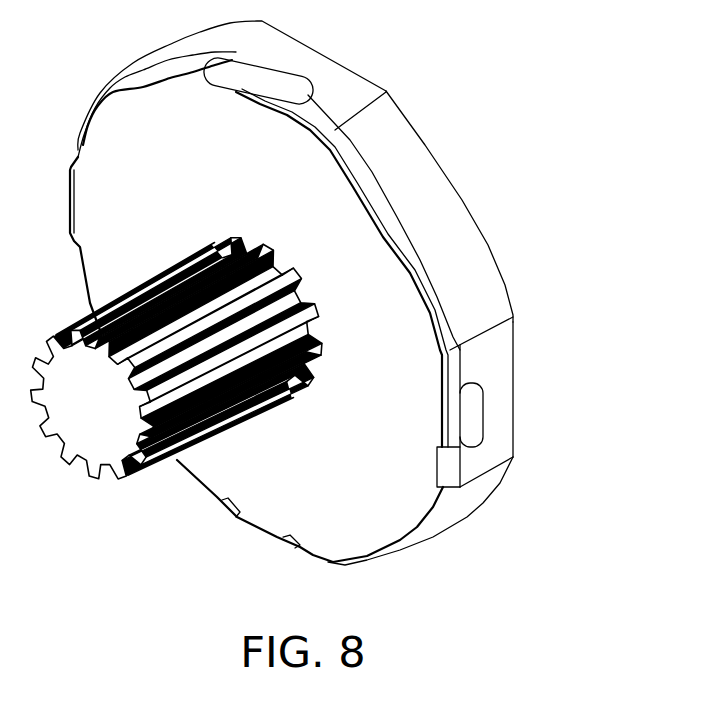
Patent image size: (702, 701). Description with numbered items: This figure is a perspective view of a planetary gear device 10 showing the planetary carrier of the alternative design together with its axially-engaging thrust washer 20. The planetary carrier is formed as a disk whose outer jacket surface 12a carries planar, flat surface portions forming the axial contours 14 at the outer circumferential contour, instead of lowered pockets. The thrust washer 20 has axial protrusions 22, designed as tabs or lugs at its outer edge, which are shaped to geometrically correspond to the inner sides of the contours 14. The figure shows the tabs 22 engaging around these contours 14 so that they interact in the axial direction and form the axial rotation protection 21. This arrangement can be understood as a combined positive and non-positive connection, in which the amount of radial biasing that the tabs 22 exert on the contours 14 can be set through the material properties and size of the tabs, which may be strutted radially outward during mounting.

The planetary gear device 10 is at (470, 117).
The outer jacket surface 12a is at (418, 230).
The axial contours 14 is at (325, 109).
The thrust washer 20 is at (142, 192).
The axially-engaging rotation protection 21 is at (243, 65).
The axial protrusions 22 is at (473, 417).